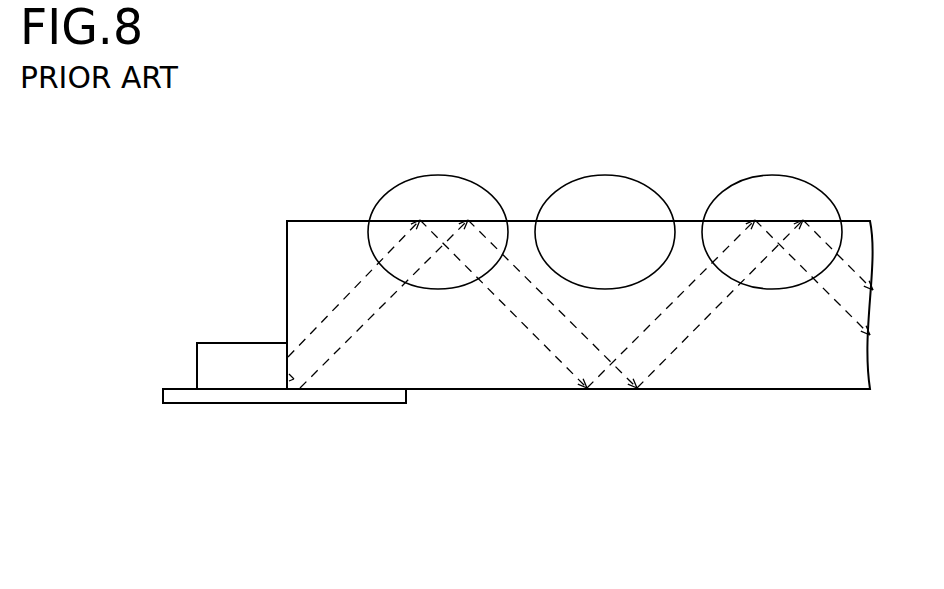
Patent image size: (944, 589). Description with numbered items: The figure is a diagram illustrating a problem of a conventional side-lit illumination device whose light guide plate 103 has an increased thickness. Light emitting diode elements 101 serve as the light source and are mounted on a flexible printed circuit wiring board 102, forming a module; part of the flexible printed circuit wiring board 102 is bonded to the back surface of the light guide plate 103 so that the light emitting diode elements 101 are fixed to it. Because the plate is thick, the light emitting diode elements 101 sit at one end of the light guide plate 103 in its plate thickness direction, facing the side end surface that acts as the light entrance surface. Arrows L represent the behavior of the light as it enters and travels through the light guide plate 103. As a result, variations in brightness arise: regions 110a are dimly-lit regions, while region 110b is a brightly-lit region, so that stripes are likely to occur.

The light emitting diode element 101 is at (224, 350).
The flexible printed circuit wiring board 102 is at (224, 395).
The light guide plate 103 is at (304, 231).
The dimly-lit region 110a is at (438, 175).
The brightly-lit region 110b is at (604, 175).
The arrows L is at (580, 304).